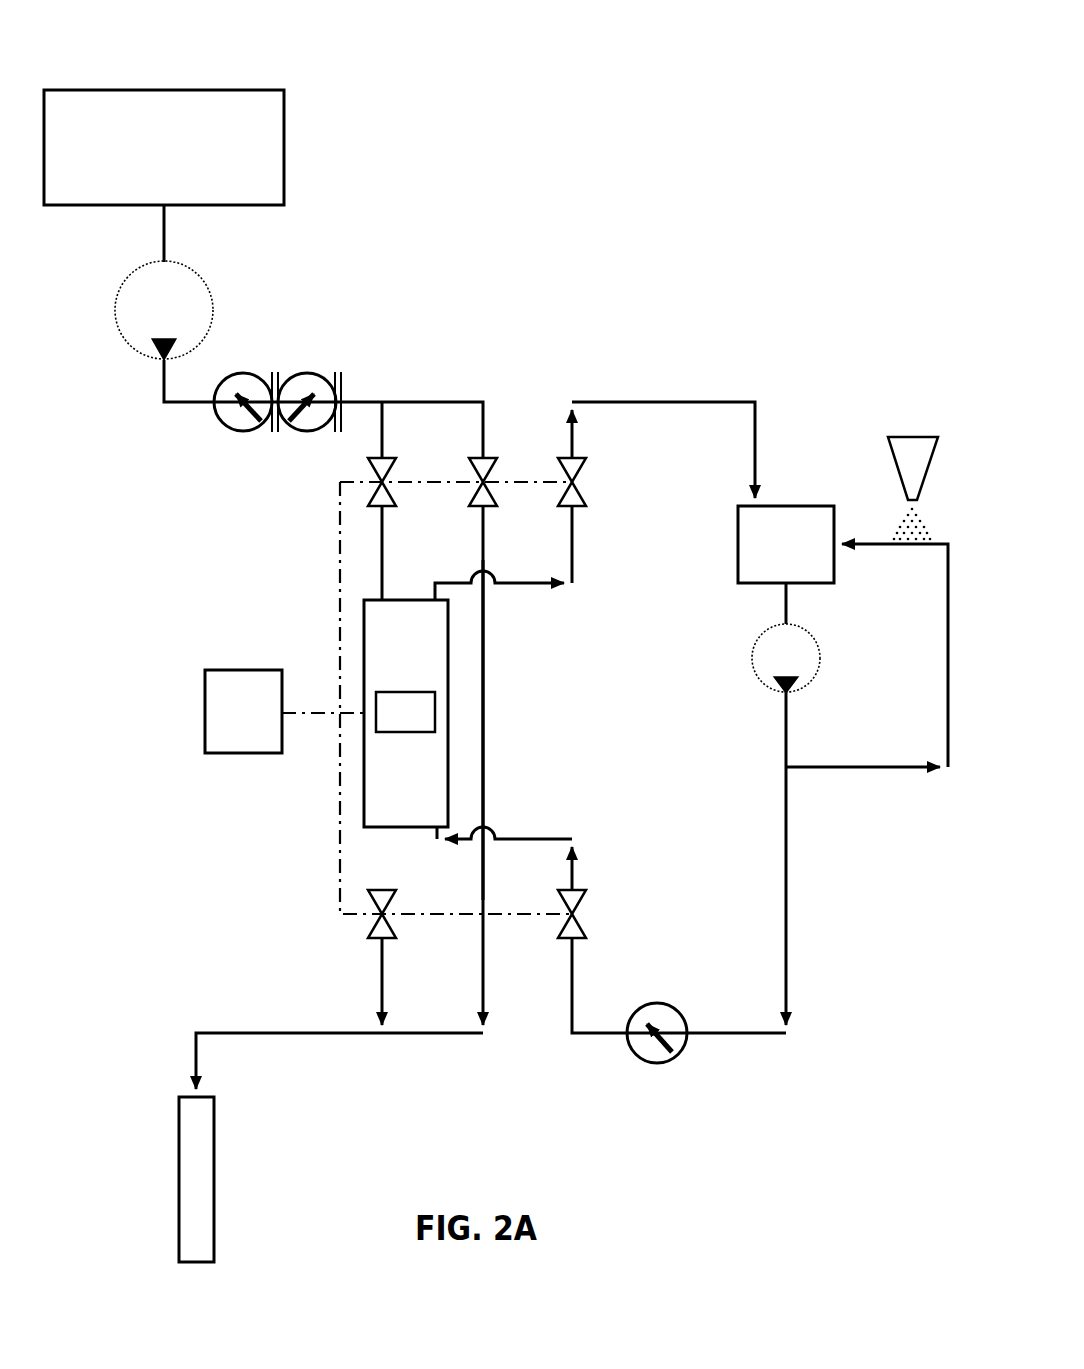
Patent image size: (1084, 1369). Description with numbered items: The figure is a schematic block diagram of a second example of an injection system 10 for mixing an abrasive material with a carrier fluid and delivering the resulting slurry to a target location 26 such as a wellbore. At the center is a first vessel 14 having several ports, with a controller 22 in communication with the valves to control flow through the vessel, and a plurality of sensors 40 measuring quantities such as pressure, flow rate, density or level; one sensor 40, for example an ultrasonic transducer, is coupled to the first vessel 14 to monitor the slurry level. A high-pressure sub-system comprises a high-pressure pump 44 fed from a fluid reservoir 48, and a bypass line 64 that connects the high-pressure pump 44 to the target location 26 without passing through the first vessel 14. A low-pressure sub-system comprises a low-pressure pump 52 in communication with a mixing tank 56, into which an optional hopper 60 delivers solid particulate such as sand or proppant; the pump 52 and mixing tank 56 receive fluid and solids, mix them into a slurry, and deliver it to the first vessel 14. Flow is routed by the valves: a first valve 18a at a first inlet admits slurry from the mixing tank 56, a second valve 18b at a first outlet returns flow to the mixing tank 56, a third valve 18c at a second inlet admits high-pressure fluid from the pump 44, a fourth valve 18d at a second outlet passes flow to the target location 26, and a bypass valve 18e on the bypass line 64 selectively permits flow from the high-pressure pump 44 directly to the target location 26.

The injection system 10 is at (96, 34).
The first vessel 14 is at (406, 713).
The first valve 18a is at (586, 898).
The second valve 18b is at (585, 462).
The third valve 18c is at (367, 463).
The fourth valve 18d is at (396, 932).
The bypass valve 18e is at (490, 455).
The controller 22 is at (243, 711).
The target location 26 is at (180, 1160).
The sensor 40 is at (285, 356).
The high-pressure pump 44 is at (123, 292).
The fluid reservoir 48 is at (164, 176).
The low-pressure pump 52 is at (763, 648).
The mixing tank 56 is at (786, 544).
The hopper 60 is at (930, 437).
The bypass line 64 is at (485, 747).